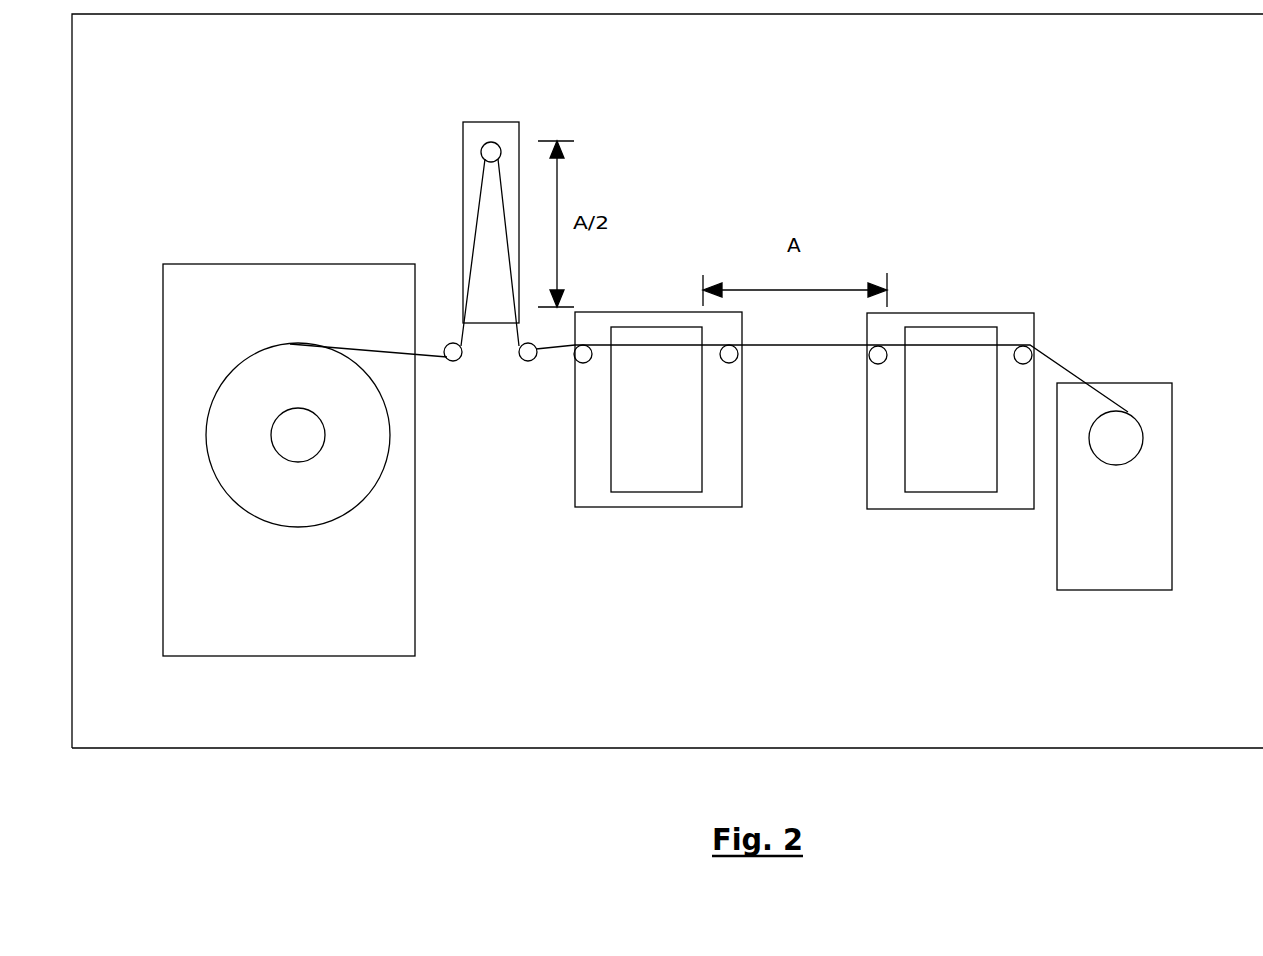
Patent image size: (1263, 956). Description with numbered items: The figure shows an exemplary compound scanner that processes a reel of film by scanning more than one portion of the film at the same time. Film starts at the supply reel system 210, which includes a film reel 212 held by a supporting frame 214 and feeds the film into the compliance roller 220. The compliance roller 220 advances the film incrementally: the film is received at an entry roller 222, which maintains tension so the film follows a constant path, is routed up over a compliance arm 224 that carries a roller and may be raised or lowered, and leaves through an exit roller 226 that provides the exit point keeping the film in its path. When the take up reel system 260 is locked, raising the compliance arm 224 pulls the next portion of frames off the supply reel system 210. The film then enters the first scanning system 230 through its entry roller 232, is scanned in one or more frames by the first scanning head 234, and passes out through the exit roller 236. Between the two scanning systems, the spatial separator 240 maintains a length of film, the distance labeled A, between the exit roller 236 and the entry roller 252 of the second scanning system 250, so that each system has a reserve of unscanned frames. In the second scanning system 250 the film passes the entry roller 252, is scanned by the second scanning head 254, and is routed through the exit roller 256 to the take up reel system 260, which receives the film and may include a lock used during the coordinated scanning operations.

The supply reel system 210 is at (343, 656).
The film reel 212 is at (350, 540).
The supporting frame 214 is at (335, 475).
The compliance roller 220 is at (532, 93).
The entry roller 222 is at (458, 359).
The compliance arm 224 is at (481, 152).
The exit roller 226 is at (526, 362).
The first scanning system 230 is at (612, 507).
The entry roller 232 is at (586, 343).
The first scanning head 234 is at (667, 492).
The exit roller 236 is at (733, 363).
The spatial separator 240 is at (757, 346).
The second scanning system 250 is at (905, 509).
The entry roller 252 is at (880, 342).
The second scanning head 254 is at (945, 327).
The exit roller 256 is at (1030, 350).
The take up reel system 260 is at (1172, 383).